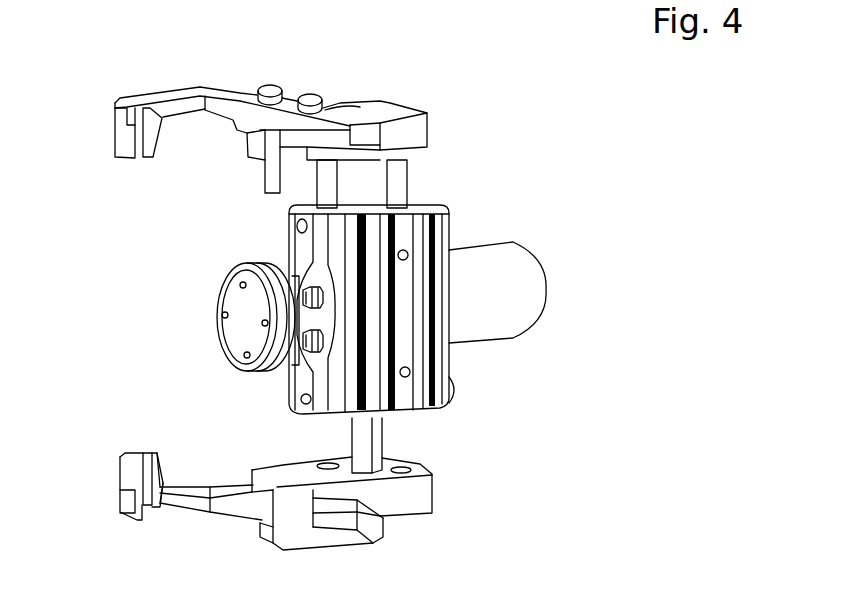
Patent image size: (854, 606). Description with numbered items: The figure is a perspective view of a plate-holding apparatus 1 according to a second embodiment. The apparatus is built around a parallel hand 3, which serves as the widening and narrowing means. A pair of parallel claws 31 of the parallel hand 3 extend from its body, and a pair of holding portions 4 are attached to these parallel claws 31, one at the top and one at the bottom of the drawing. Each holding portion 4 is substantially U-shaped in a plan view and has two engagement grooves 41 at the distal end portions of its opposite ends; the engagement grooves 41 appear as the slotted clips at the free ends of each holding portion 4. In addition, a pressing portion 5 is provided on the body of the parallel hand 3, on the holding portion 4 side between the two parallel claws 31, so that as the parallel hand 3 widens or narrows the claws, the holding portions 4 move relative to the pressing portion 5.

The plate-holding apparatus 1 is at (457, 142).
The parallel hand 3 is at (403, 227).
The holding portion 4 is at (227, 92).
The pressing portion 5 is at (235, 299).
The parallel claw 31 is at (392, 103).
The engagement groove 41 is at (125, 143).